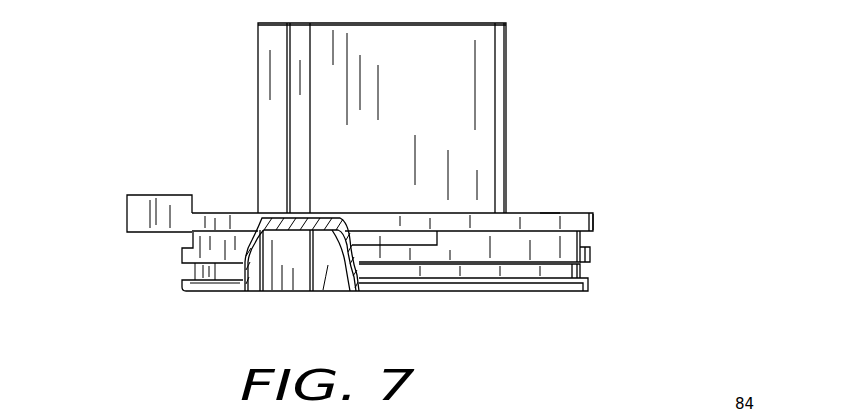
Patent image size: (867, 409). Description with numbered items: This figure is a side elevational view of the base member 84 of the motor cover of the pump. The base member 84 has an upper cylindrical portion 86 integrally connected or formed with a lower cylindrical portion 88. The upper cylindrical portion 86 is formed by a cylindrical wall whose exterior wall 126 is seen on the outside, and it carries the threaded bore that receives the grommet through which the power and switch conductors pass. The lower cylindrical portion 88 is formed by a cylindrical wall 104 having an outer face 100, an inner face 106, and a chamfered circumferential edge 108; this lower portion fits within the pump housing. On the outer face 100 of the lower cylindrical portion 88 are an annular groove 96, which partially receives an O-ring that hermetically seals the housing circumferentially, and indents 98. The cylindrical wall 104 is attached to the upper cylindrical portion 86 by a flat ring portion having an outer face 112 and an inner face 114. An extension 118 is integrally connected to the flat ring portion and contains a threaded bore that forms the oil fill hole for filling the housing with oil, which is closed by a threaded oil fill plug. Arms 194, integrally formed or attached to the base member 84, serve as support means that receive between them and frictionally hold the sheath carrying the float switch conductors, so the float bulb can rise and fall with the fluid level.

The base member 84 is at (541, 150).
The upper cylindrical portion 86 is at (251, 57).
The exterior wall 126 is at (473, 62).
The arms 194 is at (137, 212).
The outer face 100 is at (222, 205).
The outer face 112 is at (553, 212).
The lower cylindrical portion 88 is at (604, 218).
The indents 98 is at (188, 238).
The annular groove 96 is at (567, 272).
The chamfered circumferential edge 108 is at (212, 293).
The cylindrical wall 104 is at (248, 293).
The extension 118 is at (282, 292).
The inner face 106 is at (322, 290).
The inner face 114 is at (347, 290).